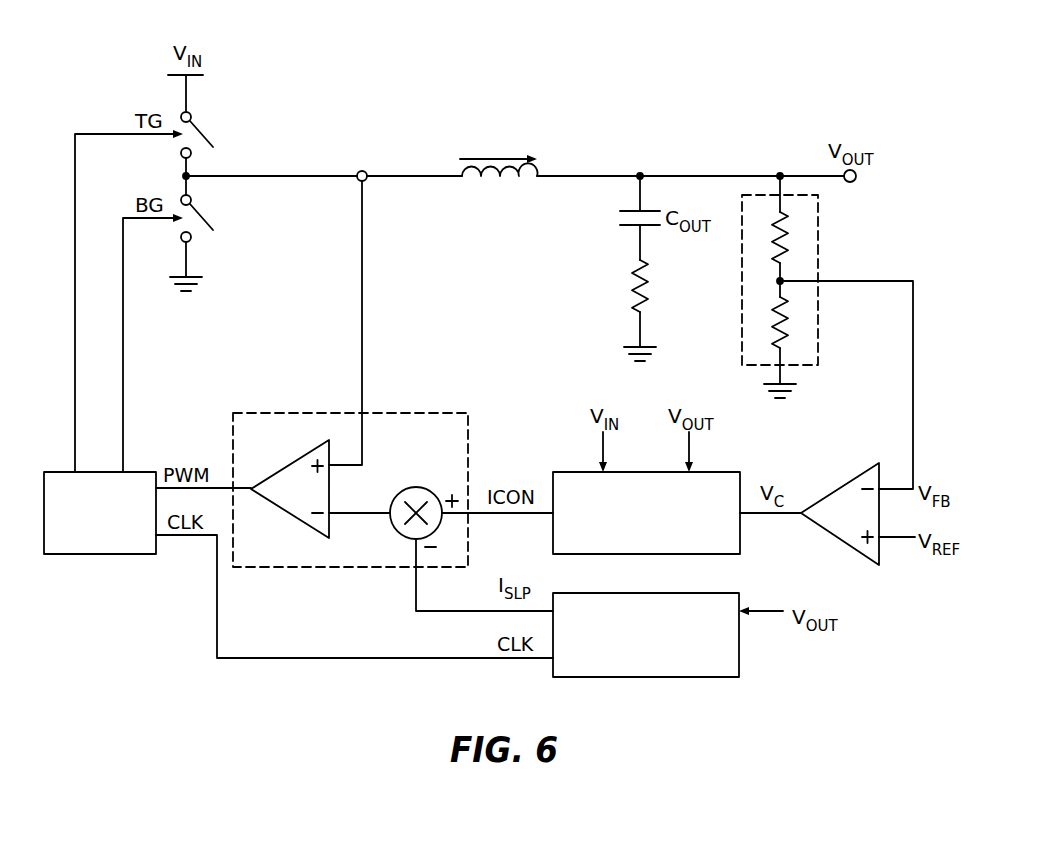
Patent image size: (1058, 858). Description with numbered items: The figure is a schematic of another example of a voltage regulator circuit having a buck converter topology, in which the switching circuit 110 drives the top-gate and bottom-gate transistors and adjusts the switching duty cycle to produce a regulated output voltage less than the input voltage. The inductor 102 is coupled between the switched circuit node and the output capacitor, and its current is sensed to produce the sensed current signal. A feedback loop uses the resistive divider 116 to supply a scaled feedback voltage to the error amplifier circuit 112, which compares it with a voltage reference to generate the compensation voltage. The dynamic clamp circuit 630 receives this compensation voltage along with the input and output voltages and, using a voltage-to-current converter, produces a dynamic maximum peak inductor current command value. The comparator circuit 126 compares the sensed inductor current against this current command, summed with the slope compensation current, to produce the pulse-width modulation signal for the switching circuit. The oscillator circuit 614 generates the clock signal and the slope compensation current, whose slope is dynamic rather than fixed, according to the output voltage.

The inductor 102 is at (503, 182).
The switching circuit 110 is at (98, 556).
The error amplifier circuit 112 is at (842, 483).
The resistive divider 116 is at (818, 228).
The comparator circuit 126 is at (298, 412).
The dynamic clamp circuit 630 is at (712, 472).
The oscillator circuit 614 is at (647, 593).